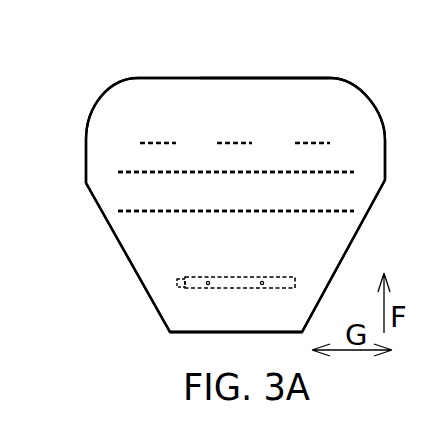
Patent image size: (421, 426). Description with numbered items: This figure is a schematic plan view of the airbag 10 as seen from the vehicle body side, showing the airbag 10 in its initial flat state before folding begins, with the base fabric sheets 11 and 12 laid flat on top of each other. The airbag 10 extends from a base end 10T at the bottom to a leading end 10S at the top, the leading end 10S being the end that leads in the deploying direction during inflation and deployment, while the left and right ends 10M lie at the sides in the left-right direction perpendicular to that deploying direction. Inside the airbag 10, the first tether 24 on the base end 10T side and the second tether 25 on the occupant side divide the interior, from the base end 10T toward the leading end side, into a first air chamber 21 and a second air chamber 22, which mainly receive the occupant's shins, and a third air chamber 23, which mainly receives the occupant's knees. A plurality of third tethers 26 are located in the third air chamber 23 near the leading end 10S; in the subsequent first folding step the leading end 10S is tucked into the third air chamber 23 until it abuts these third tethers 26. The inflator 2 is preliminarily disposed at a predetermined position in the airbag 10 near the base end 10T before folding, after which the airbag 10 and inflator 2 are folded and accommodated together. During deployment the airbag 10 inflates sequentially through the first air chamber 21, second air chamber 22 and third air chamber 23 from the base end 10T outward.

The airbag 10 is at (107, 64).
The leading end 10S is at (191, 78).
The left and right ends 10M is at (85, 141).
The base end 10T is at (155, 284).
The base fabric sheet 11 is at (338, 81).
The base fabric sheet 12 is at (270, 85).
The inflator 2 is at (202, 288).
The first air chamber 21 is at (162, 255).
The second air chamber 22 is at (133, 190).
The third air chamber 23 is at (128, 113).
The first tether 24 is at (118, 212).
The second tether 25 is at (143, 171).
The third tethers 26 is at (229, 141).